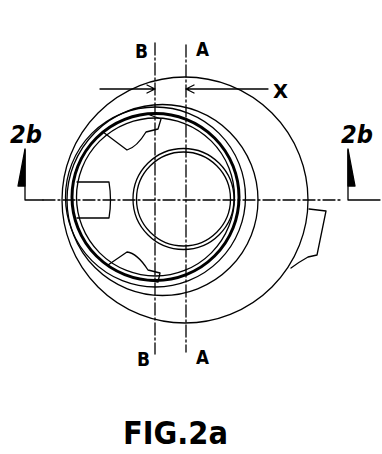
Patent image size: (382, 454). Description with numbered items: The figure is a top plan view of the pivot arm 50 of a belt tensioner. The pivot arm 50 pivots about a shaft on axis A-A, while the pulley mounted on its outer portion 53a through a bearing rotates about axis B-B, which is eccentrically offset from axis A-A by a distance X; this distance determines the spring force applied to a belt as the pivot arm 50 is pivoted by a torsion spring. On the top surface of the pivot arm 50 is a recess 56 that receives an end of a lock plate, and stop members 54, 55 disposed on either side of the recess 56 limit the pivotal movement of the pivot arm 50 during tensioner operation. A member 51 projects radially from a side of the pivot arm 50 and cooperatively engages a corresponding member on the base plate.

The pivot arm 50 is at (246, 315).
The member 51 is at (204, 173).
The outer portion 53a is at (238, 140).
The stop member 54 is at (122, 278).
The stop member 55 is at (128, 131).
The recess 56 is at (93, 207).